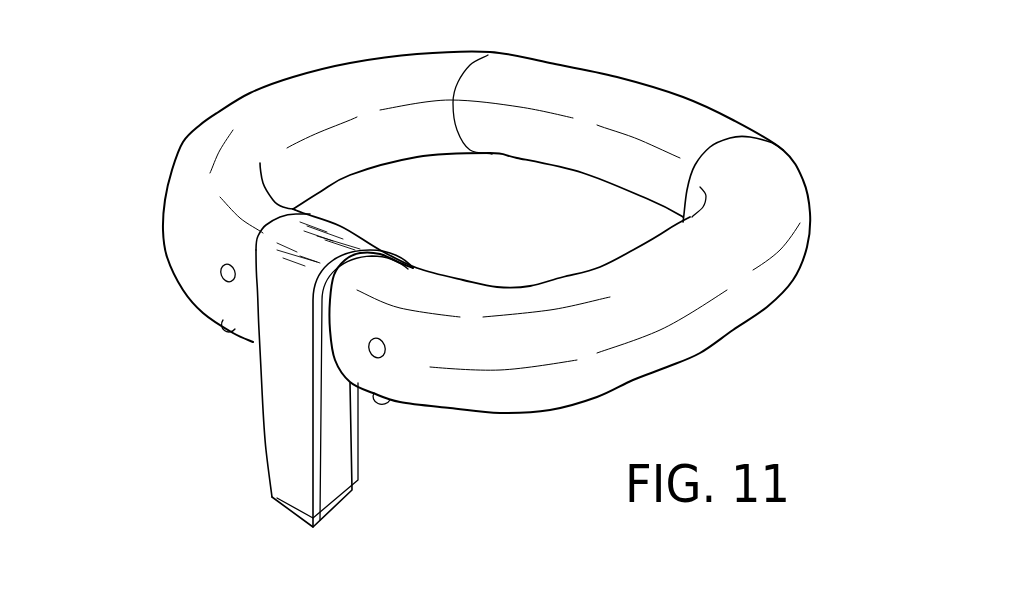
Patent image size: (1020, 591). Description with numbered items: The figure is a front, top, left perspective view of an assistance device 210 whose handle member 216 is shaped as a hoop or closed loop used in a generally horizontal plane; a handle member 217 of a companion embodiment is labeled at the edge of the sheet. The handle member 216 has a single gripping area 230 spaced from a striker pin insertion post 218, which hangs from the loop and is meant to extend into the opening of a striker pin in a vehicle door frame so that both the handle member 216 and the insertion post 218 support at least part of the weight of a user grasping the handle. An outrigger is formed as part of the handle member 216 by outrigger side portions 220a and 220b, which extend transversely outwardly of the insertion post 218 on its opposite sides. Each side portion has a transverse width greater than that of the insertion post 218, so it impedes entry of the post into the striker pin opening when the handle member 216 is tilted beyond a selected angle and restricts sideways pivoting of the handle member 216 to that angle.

The assistance device 210 is at (181, 140).
The handle member 216 is at (758, 297).
The gripping area 230 is at (665, 98).
The striker pin insertion post 218 is at (332, 477).
The outrigger side portion 220a is at (225, 303).
The outrigger side portion 220b is at (408, 368).
The handle member 217 is at (800, 578).